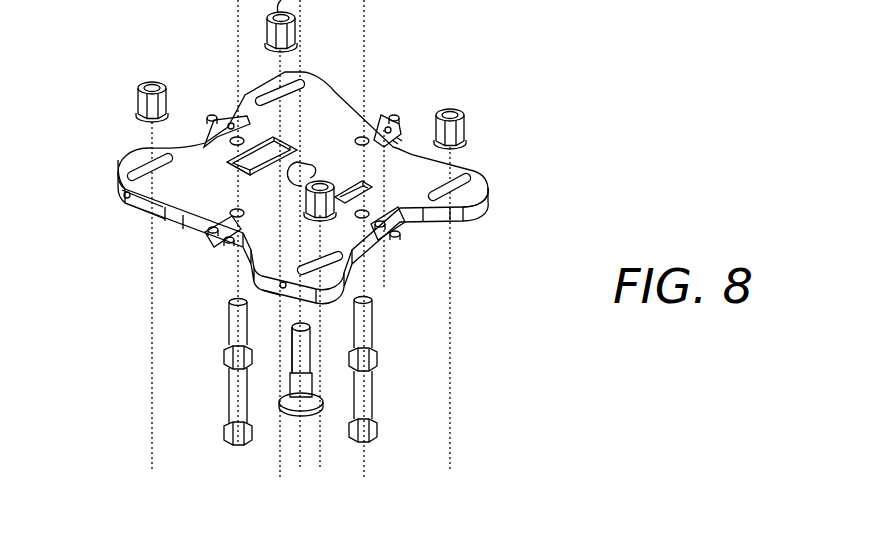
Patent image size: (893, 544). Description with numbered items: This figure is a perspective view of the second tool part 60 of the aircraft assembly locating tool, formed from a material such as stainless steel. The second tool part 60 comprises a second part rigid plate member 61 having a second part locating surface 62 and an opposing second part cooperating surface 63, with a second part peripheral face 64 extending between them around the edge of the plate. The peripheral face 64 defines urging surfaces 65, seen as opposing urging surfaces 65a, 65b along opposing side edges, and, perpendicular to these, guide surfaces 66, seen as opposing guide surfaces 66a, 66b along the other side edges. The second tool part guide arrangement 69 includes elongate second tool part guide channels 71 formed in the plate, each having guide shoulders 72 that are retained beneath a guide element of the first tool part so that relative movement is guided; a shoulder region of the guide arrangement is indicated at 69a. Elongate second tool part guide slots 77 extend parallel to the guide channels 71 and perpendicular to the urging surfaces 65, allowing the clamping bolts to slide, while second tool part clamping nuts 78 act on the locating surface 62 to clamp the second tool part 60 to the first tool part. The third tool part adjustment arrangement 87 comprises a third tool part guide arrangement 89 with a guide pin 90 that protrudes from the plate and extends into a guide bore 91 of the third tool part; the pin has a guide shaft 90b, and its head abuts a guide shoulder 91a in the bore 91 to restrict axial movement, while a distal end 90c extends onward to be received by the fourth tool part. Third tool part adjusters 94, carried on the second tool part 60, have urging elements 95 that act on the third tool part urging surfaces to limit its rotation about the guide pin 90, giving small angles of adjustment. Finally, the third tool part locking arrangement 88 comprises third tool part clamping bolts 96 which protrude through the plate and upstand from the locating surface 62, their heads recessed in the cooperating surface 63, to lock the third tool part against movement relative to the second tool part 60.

The second tool part 60 is at (707, 69).
The second part rigid plate member 61 is at (377, 120).
The second part locating surface 62 is at (458, 163).
The second part cooperating surface 63 is at (480, 207).
The second part peripheral face 64 is at (145, 208).
The urging surfaces 65 is at (282, 281).
The opposing urging surface 65a is at (127, 200).
The opposing urging surface 65b is at (478, 180).
The guide surfaces 66 is at (142, 150).
The opposing guide surface 66a is at (118, 170).
The opposing guide surface 66b is at (357, 285).
The second tool part guide arrangement 69 is at (267, 143).
The rib end 69a is at (223, 210).
The second tool part guide channels 71 is at (403, 222).
The guide shoulders 72 is at (370, 197).
The second tool part guide slots 77 is at (292, 78).
The second tool part clamping nuts 78 is at (148, 86).
The third tool part adjustment arrangement 87 is at (213, 117).
The third tool part locking arrangement 88 is at (233, 405).
The third tool part guide arrangement 89 is at (300, 415).
The guide pin 90 is at (303, 343).
The guide shaft 90b is at (303, 372).
The distal end of the guide pin 90c is at (293, 323).
The guide bore 91 is at (293, 185).
The guide shoulder 91a is at (299, 211).
The third tool part adjusters 94 is at (210, 230).
The urging elements 95 is at (400, 115).
The third tool part clamping bolts 96 is at (233, 347).